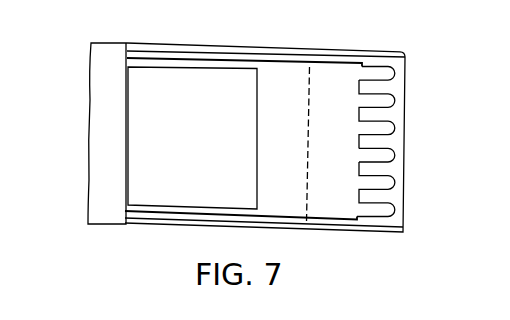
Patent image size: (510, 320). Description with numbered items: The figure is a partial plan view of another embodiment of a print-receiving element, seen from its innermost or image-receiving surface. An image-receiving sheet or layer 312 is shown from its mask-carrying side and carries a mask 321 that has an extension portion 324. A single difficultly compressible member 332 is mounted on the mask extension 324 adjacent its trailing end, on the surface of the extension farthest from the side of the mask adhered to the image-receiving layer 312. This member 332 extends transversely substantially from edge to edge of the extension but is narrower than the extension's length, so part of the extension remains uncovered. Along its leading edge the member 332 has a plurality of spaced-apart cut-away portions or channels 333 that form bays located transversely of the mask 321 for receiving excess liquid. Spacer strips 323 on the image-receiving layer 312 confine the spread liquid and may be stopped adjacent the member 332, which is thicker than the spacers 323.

The image-receiving sheet or layer 312 is at (97, 107).
The mask 321 is at (287, 73).
The spacer strips 323 is at (192, 53).
The extension portion 324 is at (329, 203).
The difficultly compressible member 332 is at (399, 113).
The cut-away portions or channels 333 is at (384, 77).